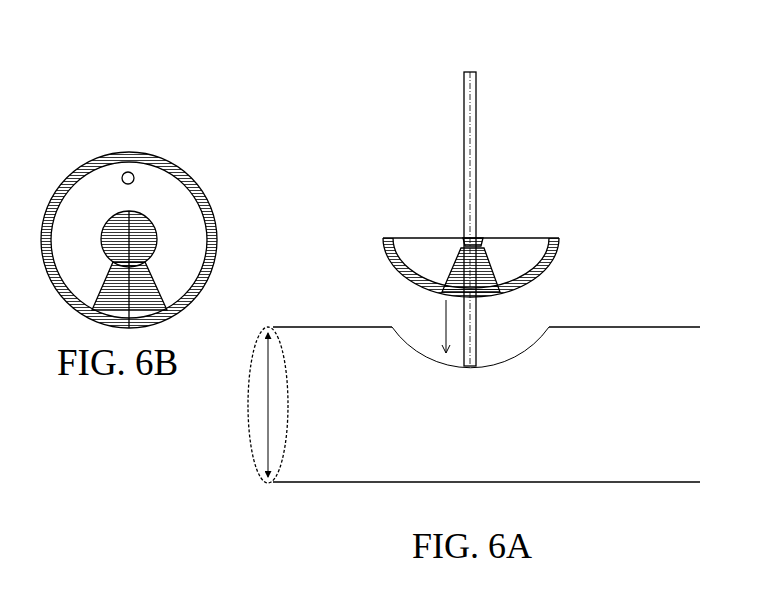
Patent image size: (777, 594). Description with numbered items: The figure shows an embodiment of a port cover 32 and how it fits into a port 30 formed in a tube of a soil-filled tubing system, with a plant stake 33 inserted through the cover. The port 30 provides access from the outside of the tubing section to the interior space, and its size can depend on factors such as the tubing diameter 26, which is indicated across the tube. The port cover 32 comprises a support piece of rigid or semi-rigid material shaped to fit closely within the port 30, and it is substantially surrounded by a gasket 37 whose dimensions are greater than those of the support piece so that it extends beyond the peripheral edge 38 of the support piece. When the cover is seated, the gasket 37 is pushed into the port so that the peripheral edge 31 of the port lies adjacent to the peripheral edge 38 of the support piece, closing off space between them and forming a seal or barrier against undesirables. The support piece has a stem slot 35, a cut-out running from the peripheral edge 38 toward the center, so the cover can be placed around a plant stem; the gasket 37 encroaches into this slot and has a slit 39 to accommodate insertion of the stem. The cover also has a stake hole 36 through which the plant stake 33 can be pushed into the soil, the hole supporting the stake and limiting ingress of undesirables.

In FIG. 6A, the interior diameter 26 is at (272, 362).
In FIG. 6A, the port 30 is at (493, 330).
In FIG. 6A, the peripheral edge of a port 31 is at (525, 345).
In FIG. 6B, the port cover 32 is at (70, 172).
In FIG. 6A, the port cover 32 is at (402, 236).
In FIG. 6A, the plant stake 33 is at (475, 98).
In FIG. 6B, the stem slot 35 is at (134, 230).
In FIG. 6A, the stem slot 35 is at (500, 238).
In FIG. 6B, the stake hole 36 is at (127, 170).
In FIG. 6B, the gasket 37 is at (197, 193).
In FIG. 6A, the gasket 37 is at (540, 258).
In FIG. 6B, the peripheral edge of the support piece 38 is at (207, 232).
In FIG. 6A, the peripheral edge of the support piece 38 is at (543, 240).
In FIG. 6B, the slit 39 is at (130, 287).
In FIG. 6A, the slit 39 is at (472, 297).